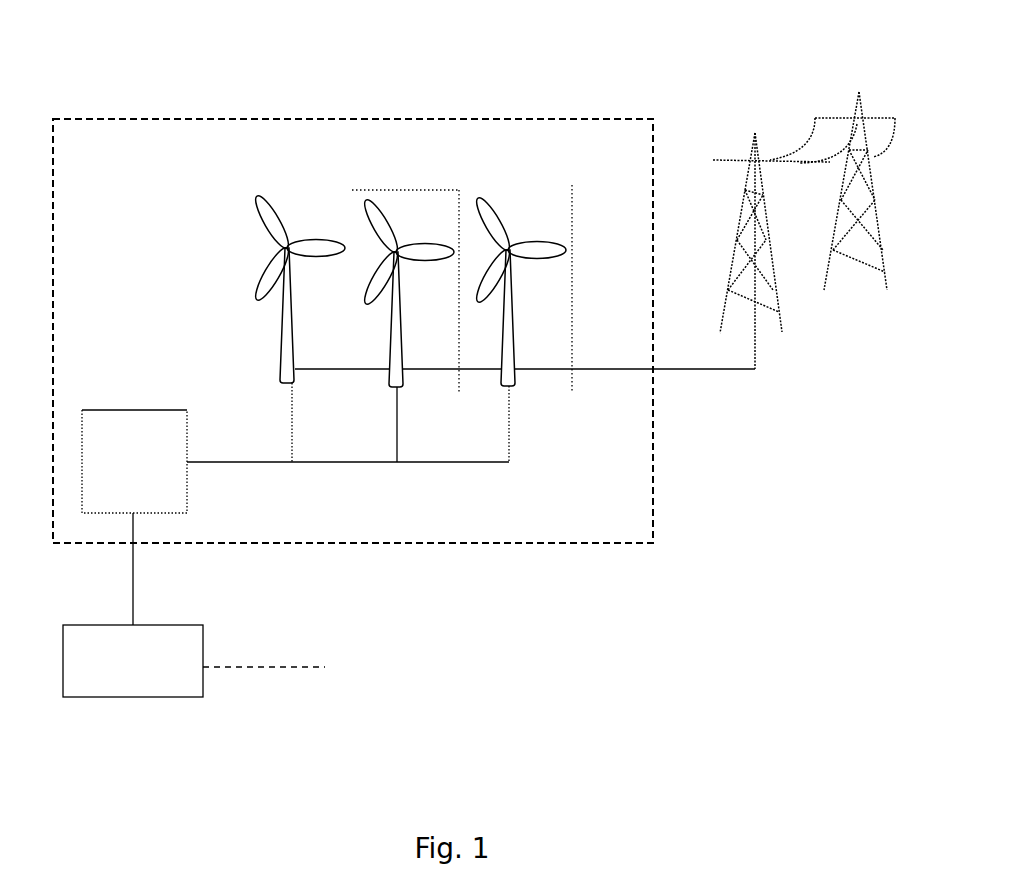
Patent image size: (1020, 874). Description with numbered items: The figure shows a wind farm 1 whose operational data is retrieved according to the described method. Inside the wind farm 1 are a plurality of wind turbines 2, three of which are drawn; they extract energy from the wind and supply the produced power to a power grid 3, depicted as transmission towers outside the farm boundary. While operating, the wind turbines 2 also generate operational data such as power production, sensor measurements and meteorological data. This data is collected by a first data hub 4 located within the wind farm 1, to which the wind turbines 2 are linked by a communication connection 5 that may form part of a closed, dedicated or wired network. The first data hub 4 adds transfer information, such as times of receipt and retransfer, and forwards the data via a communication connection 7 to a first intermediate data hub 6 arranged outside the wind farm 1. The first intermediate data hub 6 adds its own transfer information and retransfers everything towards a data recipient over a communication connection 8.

The wind farm 1 is at (216, 119).
The wind turbines 2 is at (295, 235).
The power grid 3 is at (811, 118).
The first data hub 4 is at (124, 422).
The communication connection 5 is at (383, 462).
The first intermediate data hub 6 is at (148, 680).
The communication connection 7 is at (135, 593).
The communication connection 8 is at (273, 667).